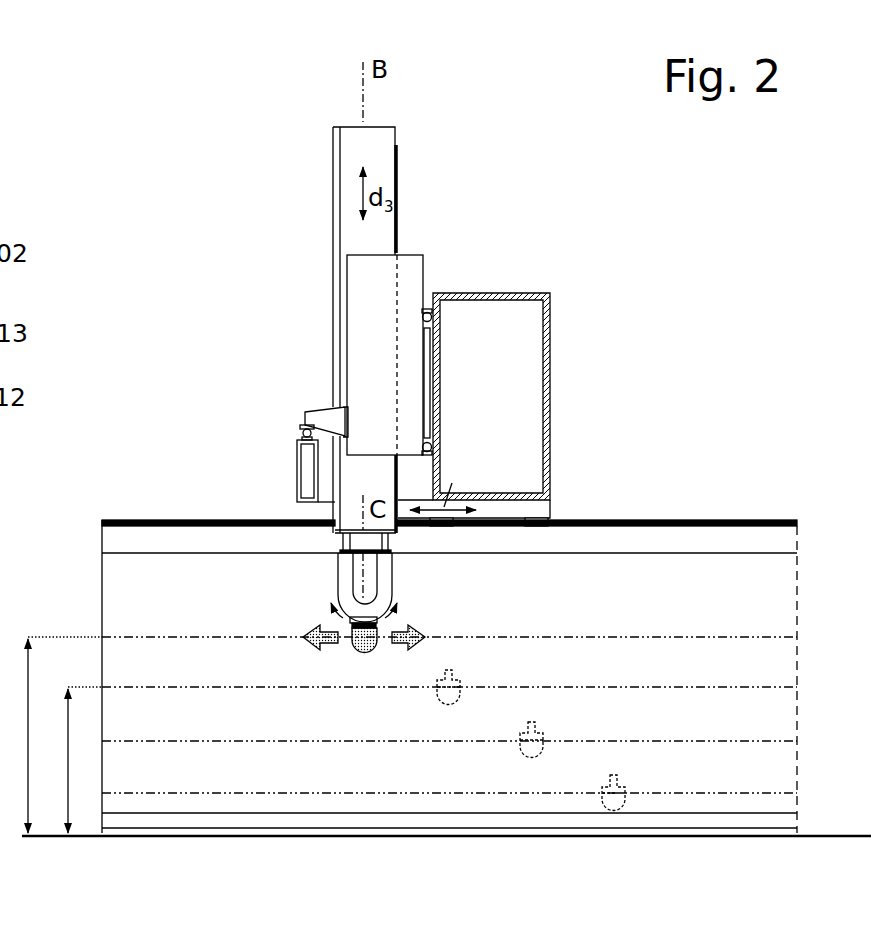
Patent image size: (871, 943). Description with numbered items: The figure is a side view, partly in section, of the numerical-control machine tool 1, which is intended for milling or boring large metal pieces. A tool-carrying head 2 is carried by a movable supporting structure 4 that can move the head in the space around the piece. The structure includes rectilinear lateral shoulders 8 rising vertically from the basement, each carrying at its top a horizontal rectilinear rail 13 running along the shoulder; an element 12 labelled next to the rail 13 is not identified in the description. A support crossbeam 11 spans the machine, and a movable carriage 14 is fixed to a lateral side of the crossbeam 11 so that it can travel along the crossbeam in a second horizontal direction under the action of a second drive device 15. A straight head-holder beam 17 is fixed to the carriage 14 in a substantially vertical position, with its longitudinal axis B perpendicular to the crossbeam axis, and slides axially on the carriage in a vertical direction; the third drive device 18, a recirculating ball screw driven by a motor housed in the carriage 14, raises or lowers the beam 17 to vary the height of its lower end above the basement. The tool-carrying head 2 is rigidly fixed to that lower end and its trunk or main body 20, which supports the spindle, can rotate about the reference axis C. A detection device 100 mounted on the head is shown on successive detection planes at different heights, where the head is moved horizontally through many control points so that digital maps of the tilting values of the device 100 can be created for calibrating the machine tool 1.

The numerical-control machine tool 1 is at (238, 249).
The tool-carrying head 2 is at (395, 583).
The movable supporting structure 4 is at (554, 291).
The lateral shoulder 8 is at (112, 597).
The support crossbeam 11 is at (297, 470).
The carriage 12 is at (499, 530).
The rectilinear rail 13 is at (138, 520).
The movable carriage 14 is at (377, 316).
The second drive device 15 is at (427, 362).
The head-holder beam 17 is at (350, 150).
The third drive device 18 is at (400, 249).
The trunk or main body 20 is at (345, 572).
The detection device 100 is at (357, 656).